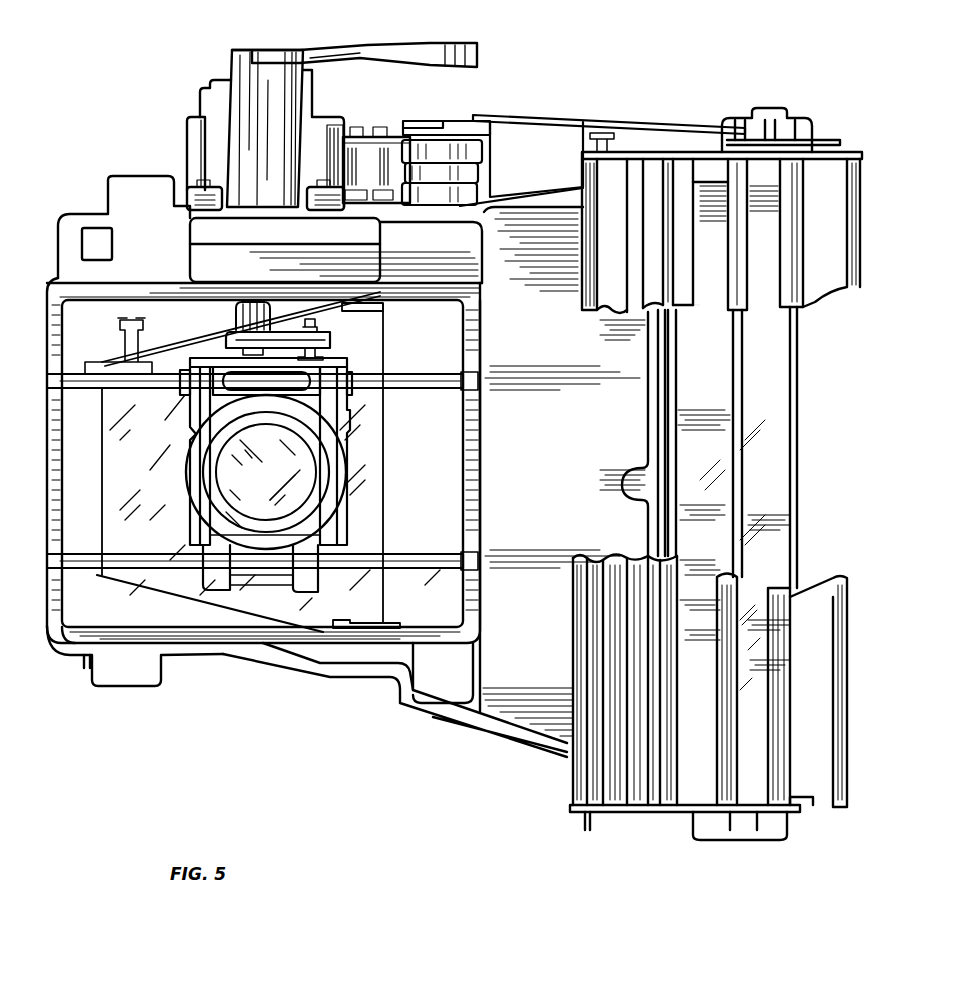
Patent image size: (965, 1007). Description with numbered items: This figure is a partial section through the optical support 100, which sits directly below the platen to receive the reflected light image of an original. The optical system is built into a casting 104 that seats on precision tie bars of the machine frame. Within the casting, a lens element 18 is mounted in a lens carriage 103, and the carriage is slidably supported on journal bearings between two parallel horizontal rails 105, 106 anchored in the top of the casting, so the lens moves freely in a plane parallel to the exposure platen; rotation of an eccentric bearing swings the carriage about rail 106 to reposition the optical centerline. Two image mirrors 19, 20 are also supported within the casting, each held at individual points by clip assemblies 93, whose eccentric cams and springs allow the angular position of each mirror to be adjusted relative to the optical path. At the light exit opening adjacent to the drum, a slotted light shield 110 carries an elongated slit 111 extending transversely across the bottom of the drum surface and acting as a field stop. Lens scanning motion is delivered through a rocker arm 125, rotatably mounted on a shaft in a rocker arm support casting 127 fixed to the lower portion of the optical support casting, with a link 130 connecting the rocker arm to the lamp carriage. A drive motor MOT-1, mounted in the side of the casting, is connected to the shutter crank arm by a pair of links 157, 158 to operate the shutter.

The optical support 100 is at (196, 668).
The casting 104 is at (398, 696).
The horizontal rail 105 is at (440, 566).
The horizontal rail 106 is at (430, 380).
The lens carriage 103 is at (352, 430).
The lens element 18 is at (312, 490).
The image mirror 19 is at (376, 320).
The clip assembly 93 is at (108, 358).
The link 130 is at (246, 342).
The rocker arm support casting 127 is at (187, 145).
The rocker arm 125 is at (442, 46).
The link 157 is at (421, 126).
The link 158 is at (628, 125).
The drive motor MOT-1 is at (476, 156).
The image mirror 20 is at (765, 360).
The slotted light shield 110 is at (828, 264).
The elongated slit 111 is at (768, 216).